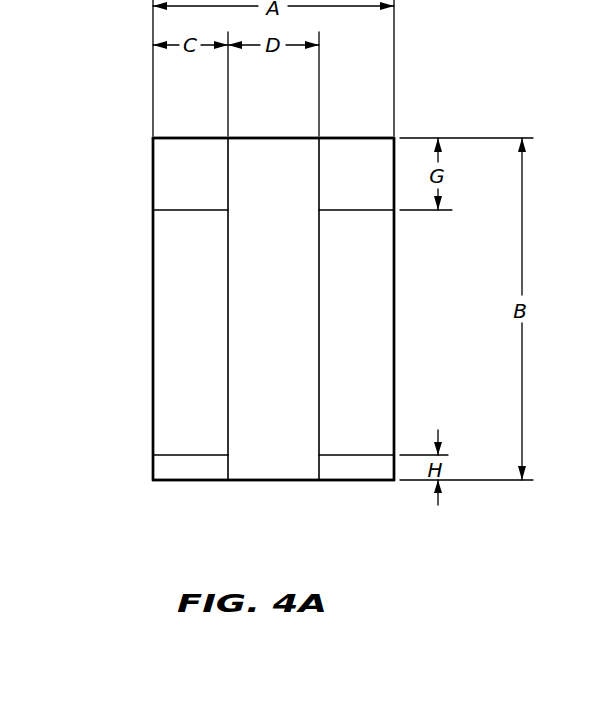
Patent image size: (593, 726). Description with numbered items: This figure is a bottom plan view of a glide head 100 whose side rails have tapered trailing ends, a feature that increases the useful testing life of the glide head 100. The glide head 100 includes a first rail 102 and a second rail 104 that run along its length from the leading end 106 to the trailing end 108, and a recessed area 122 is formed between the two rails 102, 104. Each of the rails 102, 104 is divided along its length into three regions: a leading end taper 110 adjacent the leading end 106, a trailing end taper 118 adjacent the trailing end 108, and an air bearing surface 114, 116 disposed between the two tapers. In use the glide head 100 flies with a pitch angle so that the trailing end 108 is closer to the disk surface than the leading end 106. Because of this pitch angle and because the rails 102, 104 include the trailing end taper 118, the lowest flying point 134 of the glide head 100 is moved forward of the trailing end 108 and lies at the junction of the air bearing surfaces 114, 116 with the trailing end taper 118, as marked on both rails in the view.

The glide head 100 is at (430, 100).
The first rail 102 is at (152, 317).
The second rail 104 is at (395, 362).
The leading end 106 is at (250, 137).
The trailing end 108 is at (282, 481).
The leading end taper 110 is at (168, 186).
The air bearing surface 114 is at (168, 258).
The air bearing surface 116 is at (378, 317).
The trailing end taper 118 is at (165, 467).
The recessed area 122 is at (258, 433).
The lowest flying point 134 is at (175, 453).